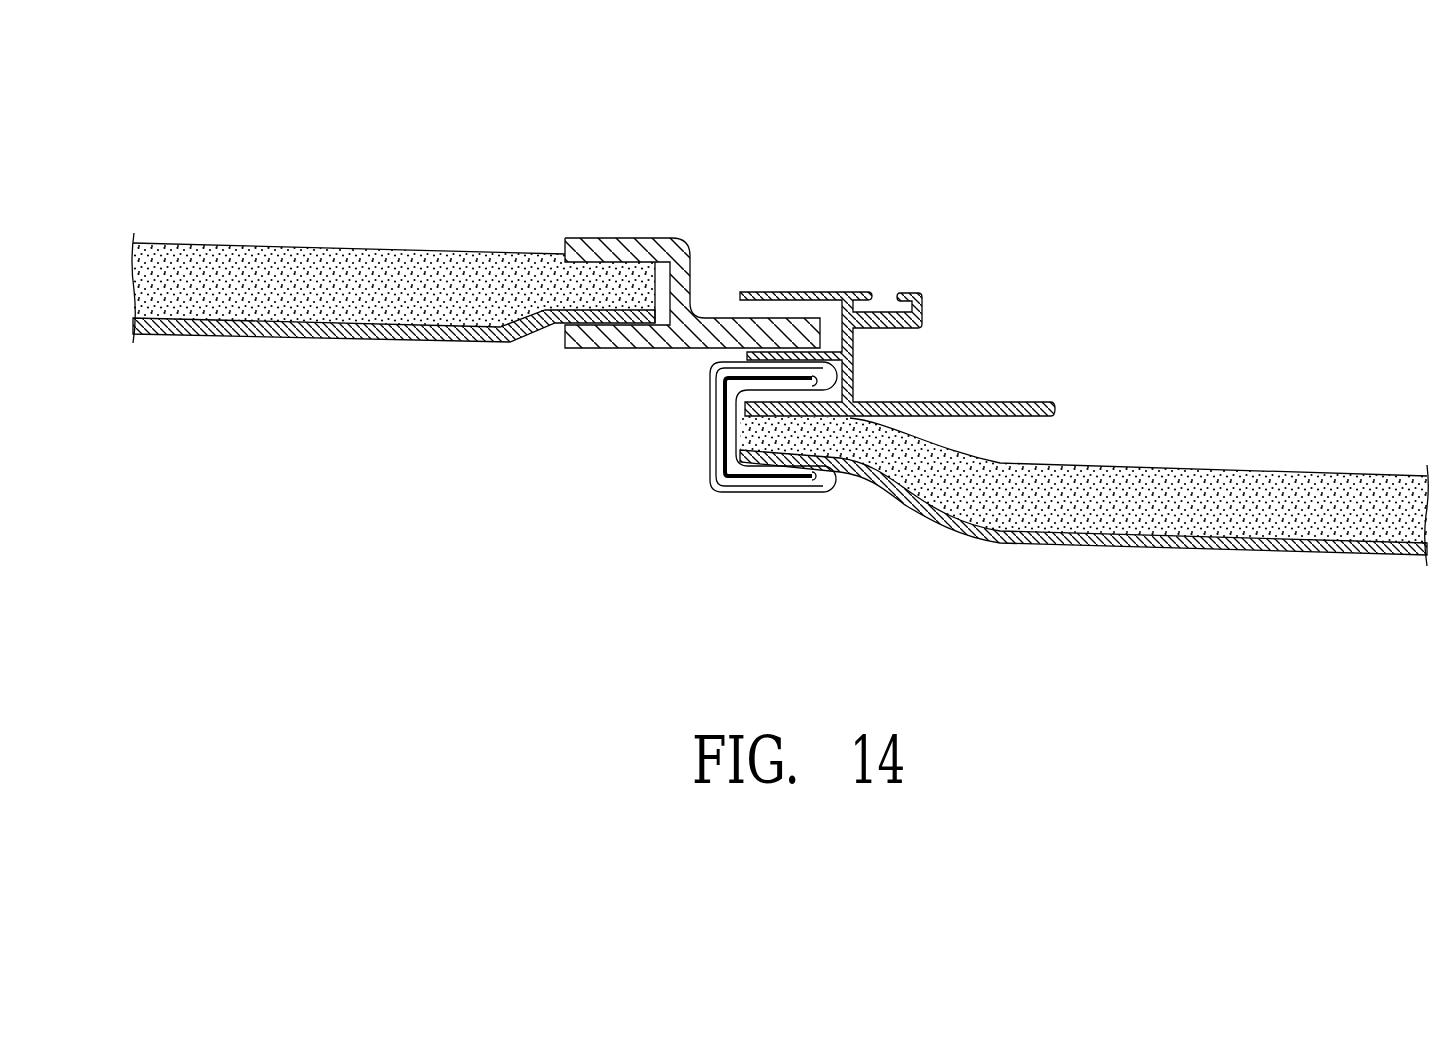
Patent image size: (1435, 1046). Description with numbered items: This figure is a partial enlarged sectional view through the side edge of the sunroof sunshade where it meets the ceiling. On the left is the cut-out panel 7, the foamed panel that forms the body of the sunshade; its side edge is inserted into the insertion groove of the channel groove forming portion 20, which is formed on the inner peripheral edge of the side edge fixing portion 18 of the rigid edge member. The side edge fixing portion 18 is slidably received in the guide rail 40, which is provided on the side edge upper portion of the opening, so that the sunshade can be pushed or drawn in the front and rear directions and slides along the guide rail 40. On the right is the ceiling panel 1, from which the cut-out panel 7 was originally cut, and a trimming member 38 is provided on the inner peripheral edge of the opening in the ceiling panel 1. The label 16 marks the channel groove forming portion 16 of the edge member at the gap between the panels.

The cut-out panel 7 is at (368, 246).
The channel groove forming portion 20 is at (612, 240).
The side edge fixing portion 18 is at (720, 317).
The guide rail 40 is at (822, 289).
The trimming member 38 is at (790, 492).
The ceiling panel 1 is at (1000, 541).
The channel groove forming portion 16 is at (660, 387).